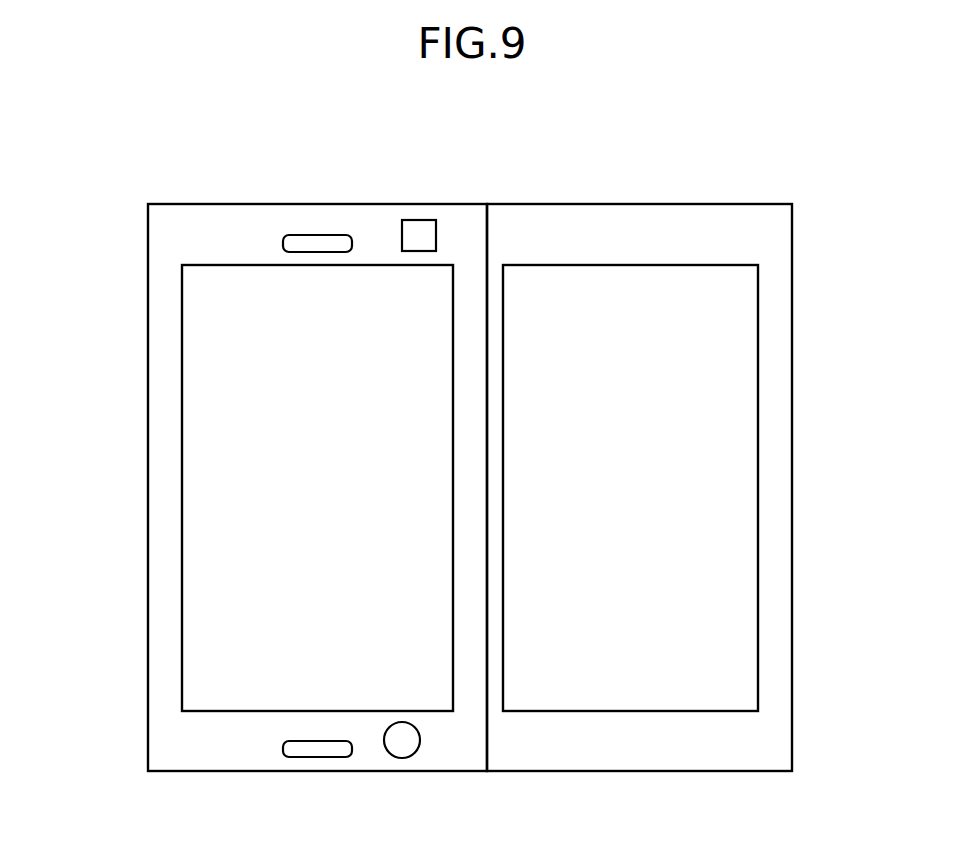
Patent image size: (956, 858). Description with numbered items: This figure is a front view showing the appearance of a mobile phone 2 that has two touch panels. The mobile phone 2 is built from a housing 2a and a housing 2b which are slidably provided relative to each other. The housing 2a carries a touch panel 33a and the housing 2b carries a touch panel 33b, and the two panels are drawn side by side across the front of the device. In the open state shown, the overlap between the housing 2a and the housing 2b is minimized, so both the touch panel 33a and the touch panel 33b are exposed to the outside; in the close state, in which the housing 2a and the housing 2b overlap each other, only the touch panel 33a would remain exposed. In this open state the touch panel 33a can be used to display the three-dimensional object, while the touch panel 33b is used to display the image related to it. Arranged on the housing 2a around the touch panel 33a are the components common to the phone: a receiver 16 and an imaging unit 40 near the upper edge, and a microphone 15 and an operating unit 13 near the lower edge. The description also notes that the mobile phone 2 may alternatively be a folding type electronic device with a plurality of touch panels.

The mobile phone 2 is at (821, 162).
The housing 2a is at (207, 204).
The housing 2b is at (629, 204).
The touch panel 33a is at (182, 413).
The touch panel 33b is at (758, 413).
The receiver 16 is at (316, 235).
The imaging unit 40 is at (415, 220).
The microphone 15 is at (320, 758).
The operating unit 13 is at (404, 758).